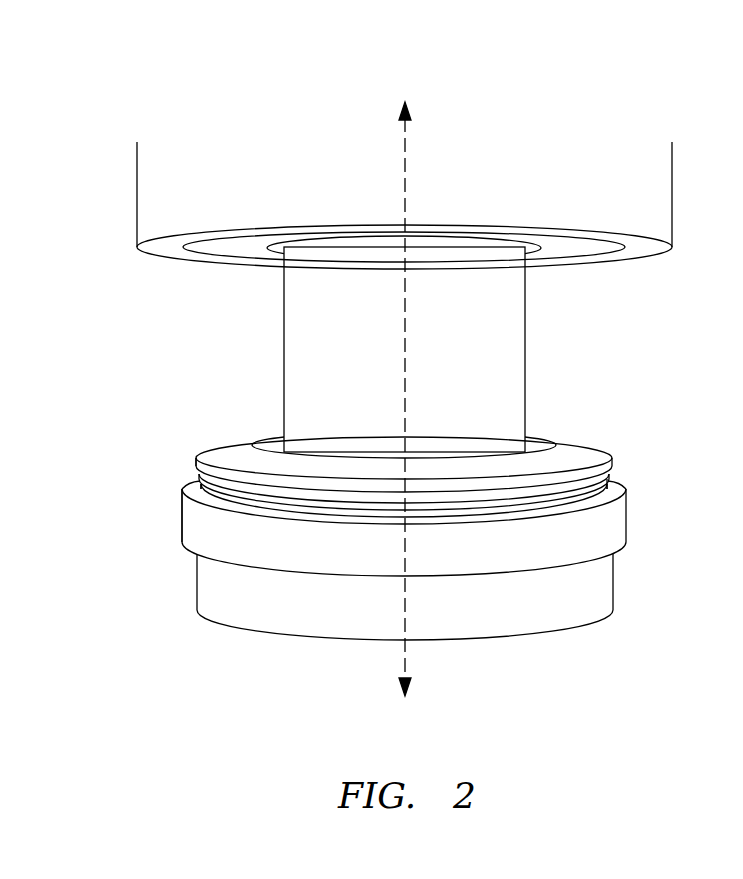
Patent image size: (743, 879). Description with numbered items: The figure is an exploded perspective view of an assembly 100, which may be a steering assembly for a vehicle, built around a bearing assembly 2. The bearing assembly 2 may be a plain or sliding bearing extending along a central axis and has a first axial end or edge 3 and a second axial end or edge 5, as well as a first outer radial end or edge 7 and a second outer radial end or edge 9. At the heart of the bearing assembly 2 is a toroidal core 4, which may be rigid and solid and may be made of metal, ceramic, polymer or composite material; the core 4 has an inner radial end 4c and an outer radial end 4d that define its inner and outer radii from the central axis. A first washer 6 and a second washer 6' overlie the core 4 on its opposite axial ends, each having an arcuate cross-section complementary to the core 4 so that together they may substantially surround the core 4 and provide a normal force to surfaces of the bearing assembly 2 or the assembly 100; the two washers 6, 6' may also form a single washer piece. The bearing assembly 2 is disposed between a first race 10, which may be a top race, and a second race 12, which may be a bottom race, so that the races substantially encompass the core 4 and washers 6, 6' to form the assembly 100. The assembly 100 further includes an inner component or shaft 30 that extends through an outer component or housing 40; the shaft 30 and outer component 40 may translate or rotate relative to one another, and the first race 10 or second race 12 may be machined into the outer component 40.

The assembly 100 is at (386, 368).
The outer component or housing 40 is at (672, 202).
The first race 10 is at (612, 248).
The inner component or shaft 30 is at (527, 346).
The bearing assembly 2 is at (360, 511).
The first axial end or edge 3 is at (567, 438).
The first outer radial end or edge 7 is at (203, 457).
The washer 6 is at (423, 459).
The core 4 is at (608, 474).
The second outer radial end or edge 9 is at (610, 468).
The outer radial end of the core 4d is at (613, 479).
The inner radial end of the core 4c is at (202, 479).
The second axial end or edge 5 is at (588, 503).
The second washer 6' is at (183, 524).
The second race 12 is at (252, 515).